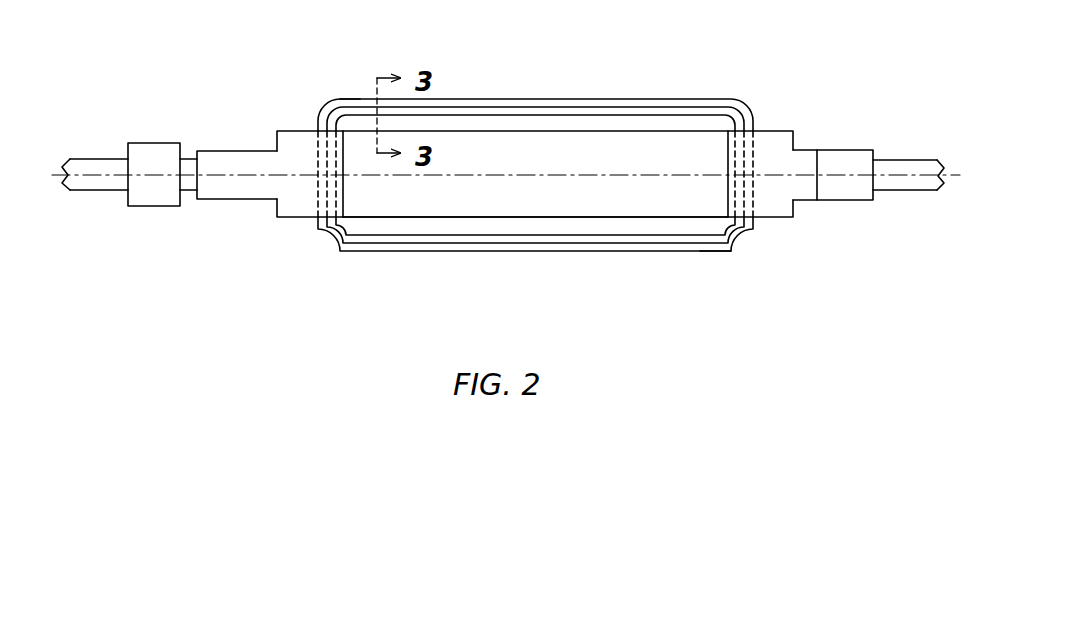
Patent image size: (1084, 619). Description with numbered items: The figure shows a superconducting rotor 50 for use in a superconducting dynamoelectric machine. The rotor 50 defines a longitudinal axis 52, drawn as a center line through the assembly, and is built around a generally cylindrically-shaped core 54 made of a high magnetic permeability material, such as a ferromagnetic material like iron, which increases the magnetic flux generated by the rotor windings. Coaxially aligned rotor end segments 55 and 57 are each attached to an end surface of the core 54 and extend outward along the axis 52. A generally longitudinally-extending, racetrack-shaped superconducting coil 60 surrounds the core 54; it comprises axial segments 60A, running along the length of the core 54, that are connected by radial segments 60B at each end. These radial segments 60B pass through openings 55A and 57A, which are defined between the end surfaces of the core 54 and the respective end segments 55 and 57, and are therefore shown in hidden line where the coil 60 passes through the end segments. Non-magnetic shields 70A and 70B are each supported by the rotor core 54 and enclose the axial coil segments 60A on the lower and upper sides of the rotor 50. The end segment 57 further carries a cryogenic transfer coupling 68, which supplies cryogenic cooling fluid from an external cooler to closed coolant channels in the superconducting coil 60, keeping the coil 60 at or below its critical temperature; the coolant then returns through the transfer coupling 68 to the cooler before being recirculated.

The superconducting rotor 50 is at (275, 65).
The longitudinal axis 52 is at (522, 172).
The core 54 is at (593, 218).
The rotor end segment 55 is at (843, 200).
The opening 55A is at (750, 203).
The rotor end segment 57 is at (237, 202).
The opening 57A is at (317, 206).
The superconducting coil 60 is at (583, 100).
The axial segments 60A is at (662, 106).
The radial segments 60B is at (319, 155).
The cryogenic transfer coupling 68 is at (155, 143).
The non-magnetic shield 70A is at (717, 252).
The non-magnetic shield 70B is at (355, 98).